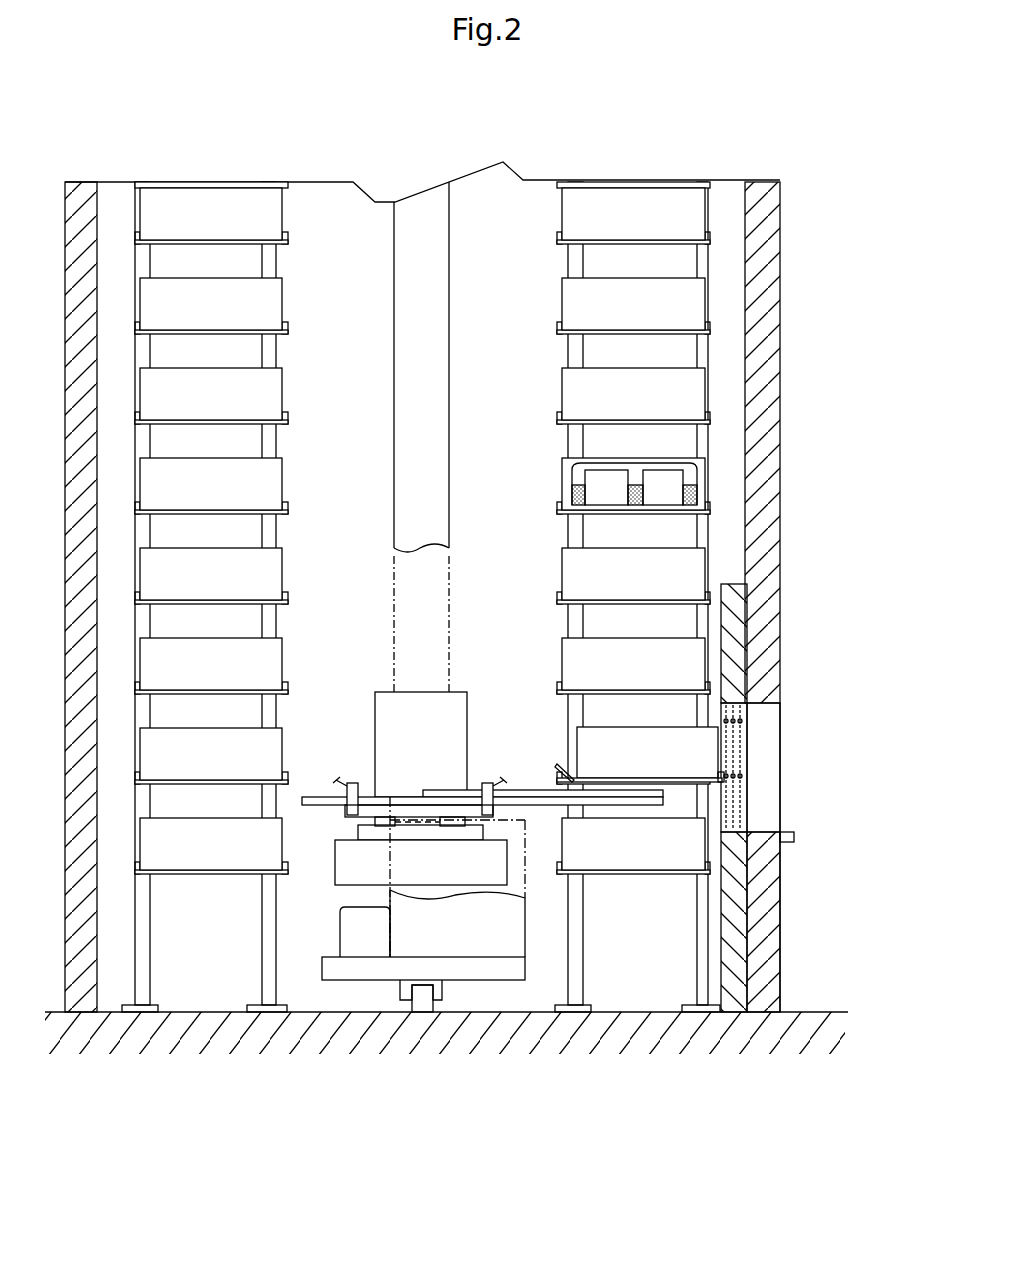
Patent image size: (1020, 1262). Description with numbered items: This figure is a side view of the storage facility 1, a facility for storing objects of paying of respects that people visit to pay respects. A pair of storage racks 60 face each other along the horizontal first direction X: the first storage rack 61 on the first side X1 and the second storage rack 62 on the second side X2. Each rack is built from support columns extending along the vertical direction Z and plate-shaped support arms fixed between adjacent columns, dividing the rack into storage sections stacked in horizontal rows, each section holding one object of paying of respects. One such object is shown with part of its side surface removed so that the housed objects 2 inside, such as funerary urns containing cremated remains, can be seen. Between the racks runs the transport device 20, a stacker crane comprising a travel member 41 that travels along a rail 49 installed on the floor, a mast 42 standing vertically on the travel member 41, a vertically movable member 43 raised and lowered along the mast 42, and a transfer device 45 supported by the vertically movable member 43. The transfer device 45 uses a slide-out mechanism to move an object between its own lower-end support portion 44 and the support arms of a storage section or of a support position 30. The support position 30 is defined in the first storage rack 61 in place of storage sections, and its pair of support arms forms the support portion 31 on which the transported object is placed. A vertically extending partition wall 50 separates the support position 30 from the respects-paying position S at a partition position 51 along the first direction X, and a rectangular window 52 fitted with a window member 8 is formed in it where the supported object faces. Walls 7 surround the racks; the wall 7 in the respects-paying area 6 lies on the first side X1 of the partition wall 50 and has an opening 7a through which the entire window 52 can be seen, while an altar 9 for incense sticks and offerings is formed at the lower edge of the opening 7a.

The storage facility 1 is at (800, 215).
The housed object 2 is at (607, 470).
The respects-paying area 6 is at (796, 722).
The wall 7 is at (780, 375).
The opening 7a is at (766, 705).
The window member 8 is at (748, 748).
The altar 9 is at (794, 840).
The transport device 20 is at (439, 814).
The support position 30 is at (609, 757).
The support portion 31 is at (637, 785).
The travel member 41 is at (330, 966).
The mast 42 is at (415, 292).
The vertically movable member 43 is at (345, 868).
The lower-end support portion 44 is at (672, 785).
The transfer device 45 is at (517, 780).
The rail 49 is at (420, 993).
The partition wall 50 is at (747, 585).
The partition position 51 is at (730, 1014).
The window 52 is at (752, 768).
The storage rack 60 is at (442, 544).
The first storage rack 61 is at (588, 558).
The second storage rack 62 is at (245, 544).
The respects-paying position S is at (850, 915).
The first direction X is at (512, 120).
The first side X1 is at (531, 122).
The second side X2 is at (319, 122).
The vertical direction Z is at (478, 247).